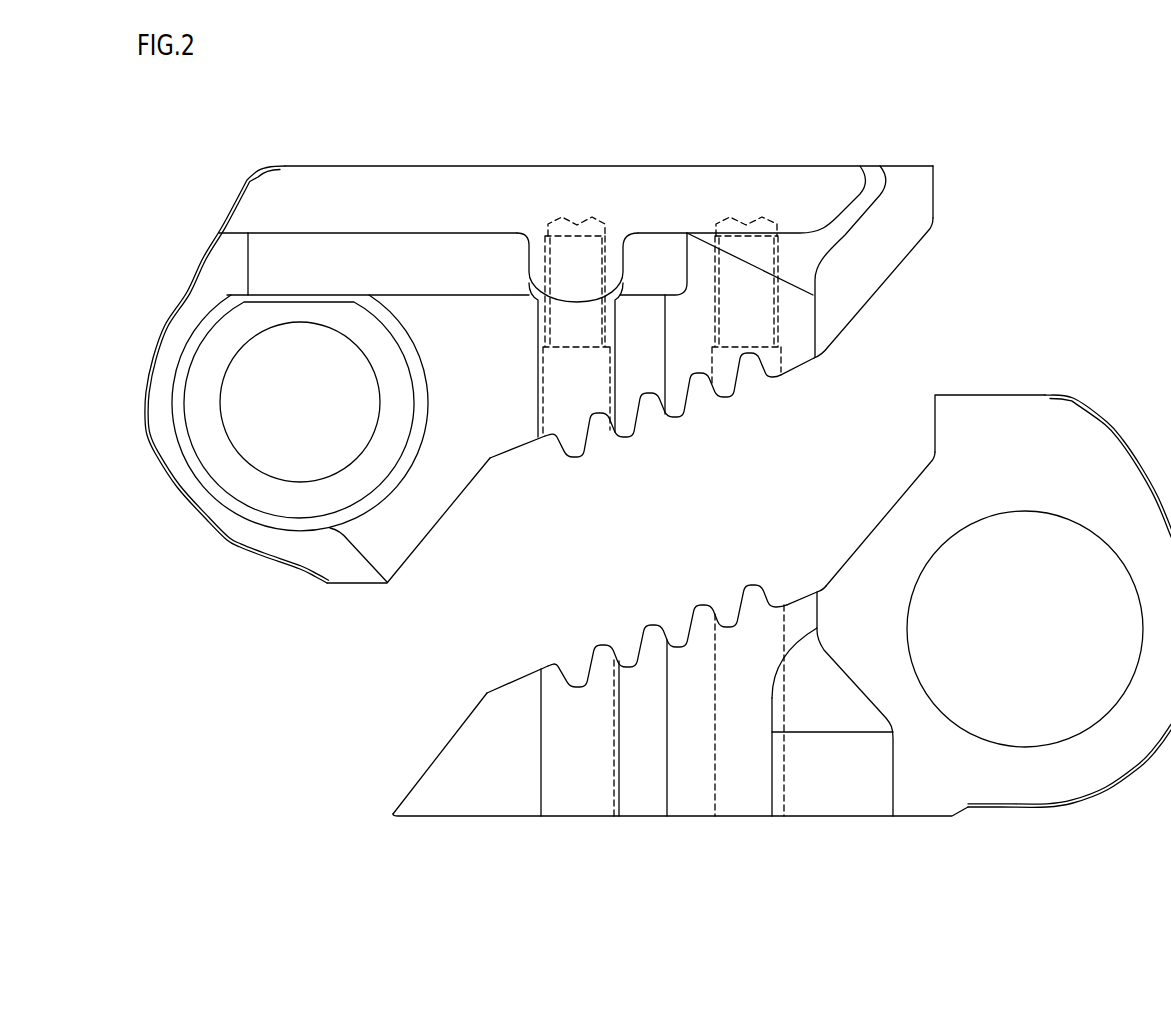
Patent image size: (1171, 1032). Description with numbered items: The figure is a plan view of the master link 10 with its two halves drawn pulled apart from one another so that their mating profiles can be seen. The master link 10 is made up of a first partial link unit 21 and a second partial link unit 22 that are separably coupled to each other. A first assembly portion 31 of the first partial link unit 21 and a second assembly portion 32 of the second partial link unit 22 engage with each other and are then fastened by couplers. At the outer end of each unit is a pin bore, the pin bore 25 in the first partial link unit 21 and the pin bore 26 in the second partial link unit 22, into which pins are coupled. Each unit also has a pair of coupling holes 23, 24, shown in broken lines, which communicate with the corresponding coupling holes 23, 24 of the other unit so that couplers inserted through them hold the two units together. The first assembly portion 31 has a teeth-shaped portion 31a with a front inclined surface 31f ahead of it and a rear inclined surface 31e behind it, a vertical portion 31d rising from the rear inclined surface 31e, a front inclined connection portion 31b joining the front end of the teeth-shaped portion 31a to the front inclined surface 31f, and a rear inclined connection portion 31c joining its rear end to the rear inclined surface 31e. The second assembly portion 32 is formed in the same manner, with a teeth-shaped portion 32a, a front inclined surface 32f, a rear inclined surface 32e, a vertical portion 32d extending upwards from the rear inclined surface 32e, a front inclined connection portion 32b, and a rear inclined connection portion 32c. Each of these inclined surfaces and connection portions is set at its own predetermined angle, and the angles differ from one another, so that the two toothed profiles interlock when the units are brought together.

The master link 10 is at (190, 146).
The first partial link unit 21 is at (737, 150).
The second partial link unit 22 is at (850, 835).
The coupling hole 23 is at (556, 420).
The coupling hole 24 is at (757, 330).
The pin bore 25 is at (303, 434).
The pin bore 26 is at (1035, 670).
The first assembly portion 31 is at (694, 455).
The teeth-shaped portion 31a is at (640, 420).
The front inclined connection portion 31b is at (522, 452).
The rear inclined connection portion 31c is at (798, 372).
The vertical portion 31d is at (935, 190).
The rear inclined surface 31e is at (880, 297).
The front inclined surface 31f is at (446, 514).
The second assembly portion 32 is at (658, 594).
The teeth-shaped portion 32a is at (637, 644).
The front inclined connection portion 32b is at (513, 678).
The rear inclined connection portion 32c is at (798, 590).
The vertical portion 32d is at (935, 419).
The rear inclined surface 32e is at (878, 523).
The front inclined surface 32f is at (442, 747).